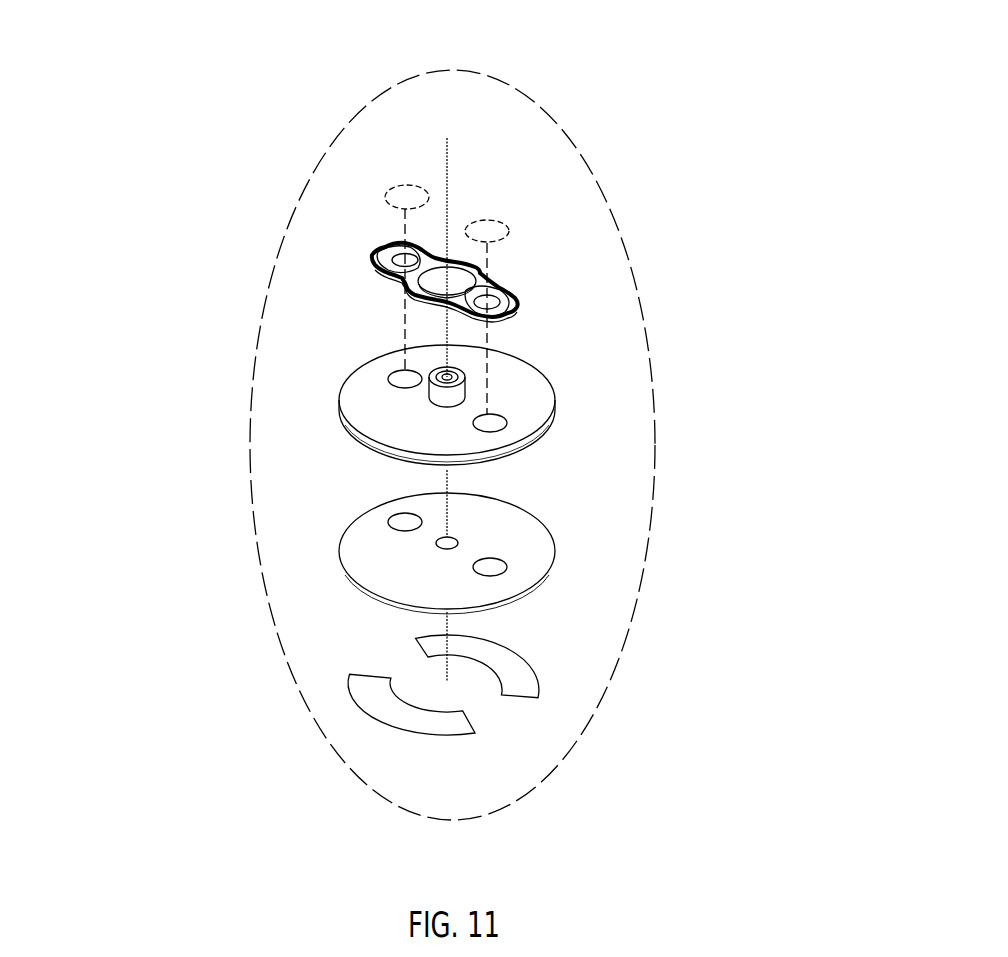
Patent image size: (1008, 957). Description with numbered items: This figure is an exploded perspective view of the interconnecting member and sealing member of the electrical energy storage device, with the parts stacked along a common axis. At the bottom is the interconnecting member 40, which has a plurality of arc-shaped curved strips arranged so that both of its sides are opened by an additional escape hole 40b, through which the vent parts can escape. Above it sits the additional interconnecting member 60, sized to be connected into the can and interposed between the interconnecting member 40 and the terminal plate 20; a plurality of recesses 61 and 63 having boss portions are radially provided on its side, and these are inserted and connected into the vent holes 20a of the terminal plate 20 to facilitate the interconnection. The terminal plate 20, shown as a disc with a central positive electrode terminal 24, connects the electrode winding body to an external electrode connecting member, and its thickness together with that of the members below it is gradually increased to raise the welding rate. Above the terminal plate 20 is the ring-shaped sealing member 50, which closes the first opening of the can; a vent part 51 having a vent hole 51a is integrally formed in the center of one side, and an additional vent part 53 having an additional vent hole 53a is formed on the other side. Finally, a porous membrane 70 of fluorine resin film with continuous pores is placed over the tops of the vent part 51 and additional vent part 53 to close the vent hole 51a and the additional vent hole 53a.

The terminal plate 20 is at (342, 412).
The vent hole 20a is at (390, 373).
The positive electrode terminal 24 is at (465, 378).
The interconnecting member 40 is at (393, 703).
The additional escape hole 40b is at (670, 778).
The sealing member 50 is at (387, 290).
The vent part 51 is at (517, 307).
The vent hole 51a is at (510, 283).
The additional vent part 53 is at (390, 267).
The additional vent hole 53a is at (385, 250).
The additional interconnecting member 60 is at (342, 557).
The recess 61 is at (555, 558).
The recess 63 is at (390, 516).
The porous membrane 70 is at (478, 228).